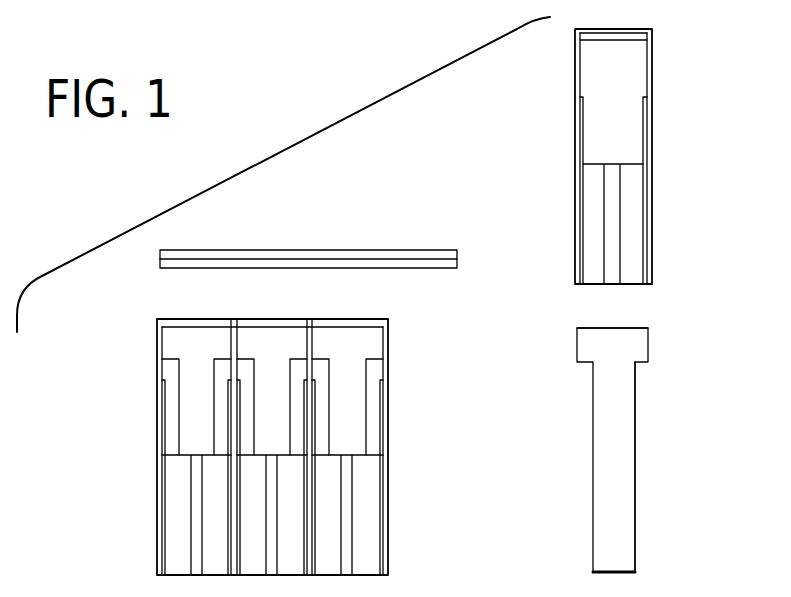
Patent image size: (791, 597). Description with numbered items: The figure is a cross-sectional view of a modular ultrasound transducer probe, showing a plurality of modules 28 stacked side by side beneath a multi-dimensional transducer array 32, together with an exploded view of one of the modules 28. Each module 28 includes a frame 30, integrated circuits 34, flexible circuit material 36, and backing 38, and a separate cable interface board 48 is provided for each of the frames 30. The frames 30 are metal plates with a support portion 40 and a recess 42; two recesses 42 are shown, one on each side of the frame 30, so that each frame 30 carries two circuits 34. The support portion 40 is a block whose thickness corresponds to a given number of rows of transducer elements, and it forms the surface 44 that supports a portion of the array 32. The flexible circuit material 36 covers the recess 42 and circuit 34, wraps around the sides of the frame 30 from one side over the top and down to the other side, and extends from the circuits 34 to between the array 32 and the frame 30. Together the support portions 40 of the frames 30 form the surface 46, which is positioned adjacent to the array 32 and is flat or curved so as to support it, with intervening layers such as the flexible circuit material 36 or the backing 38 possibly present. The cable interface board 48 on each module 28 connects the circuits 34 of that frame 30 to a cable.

The module 28 is at (272, 396).
The frame 30 is at (350, 400).
The multi-dimensional transducer array 32 is at (278, 262).
The circuit 34 is at (318, 386).
The flexible circuit material 36 is at (575, 60).
The backing 38 is at (607, 42).
The support portion 40 is at (625, 345).
The recess 42 is at (637, 453).
The surface 44 is at (623, 22).
The surface 46 is at (248, 319).
The cable interface board 48 is at (348, 522).